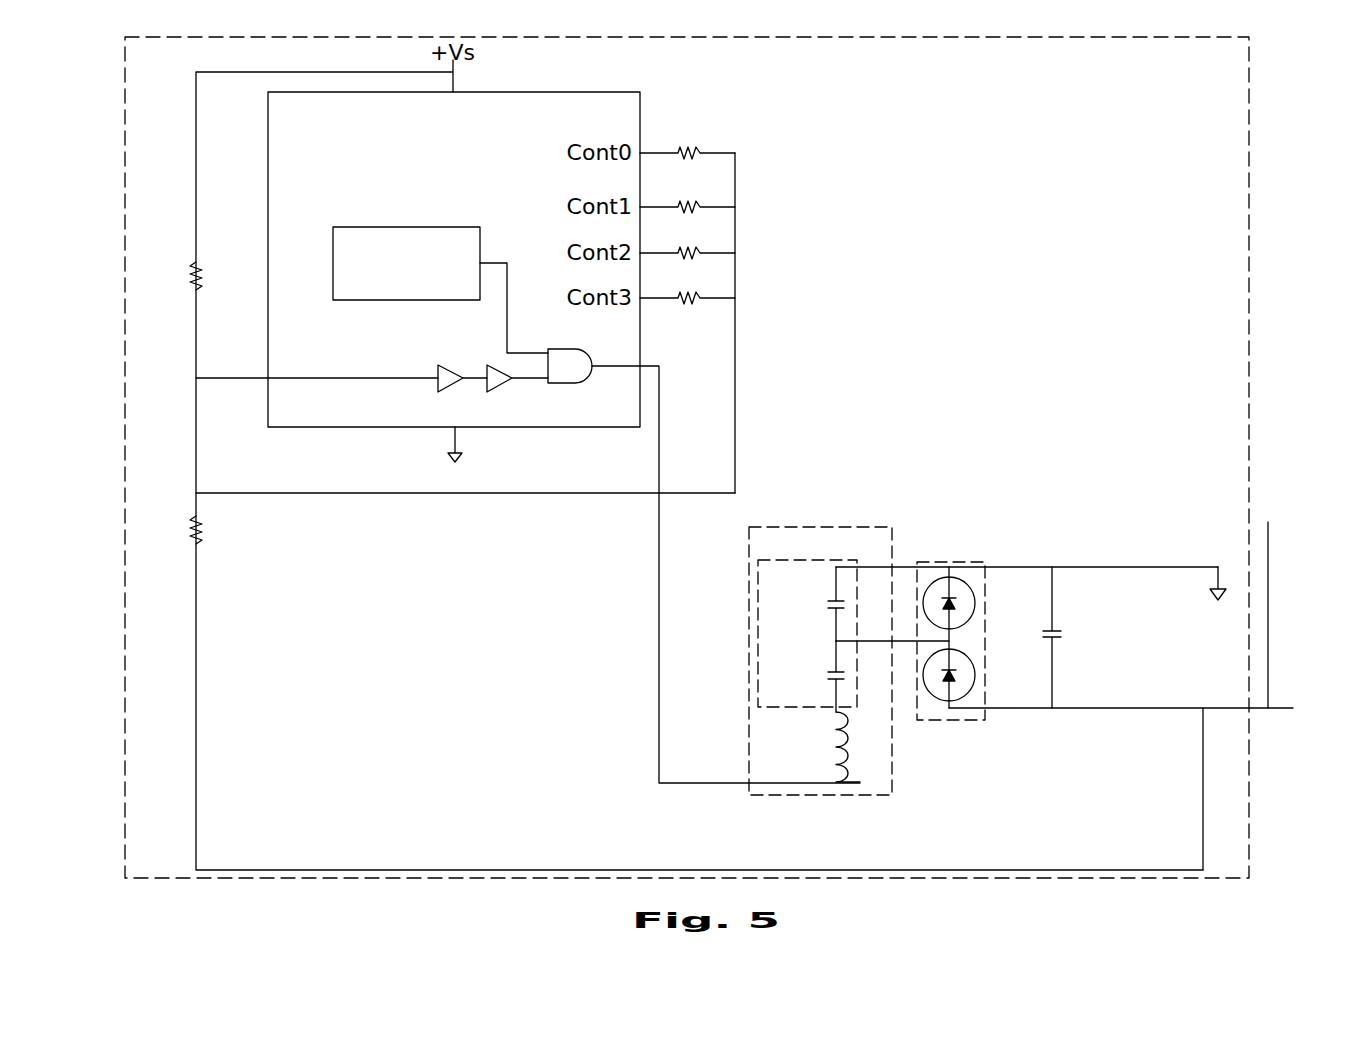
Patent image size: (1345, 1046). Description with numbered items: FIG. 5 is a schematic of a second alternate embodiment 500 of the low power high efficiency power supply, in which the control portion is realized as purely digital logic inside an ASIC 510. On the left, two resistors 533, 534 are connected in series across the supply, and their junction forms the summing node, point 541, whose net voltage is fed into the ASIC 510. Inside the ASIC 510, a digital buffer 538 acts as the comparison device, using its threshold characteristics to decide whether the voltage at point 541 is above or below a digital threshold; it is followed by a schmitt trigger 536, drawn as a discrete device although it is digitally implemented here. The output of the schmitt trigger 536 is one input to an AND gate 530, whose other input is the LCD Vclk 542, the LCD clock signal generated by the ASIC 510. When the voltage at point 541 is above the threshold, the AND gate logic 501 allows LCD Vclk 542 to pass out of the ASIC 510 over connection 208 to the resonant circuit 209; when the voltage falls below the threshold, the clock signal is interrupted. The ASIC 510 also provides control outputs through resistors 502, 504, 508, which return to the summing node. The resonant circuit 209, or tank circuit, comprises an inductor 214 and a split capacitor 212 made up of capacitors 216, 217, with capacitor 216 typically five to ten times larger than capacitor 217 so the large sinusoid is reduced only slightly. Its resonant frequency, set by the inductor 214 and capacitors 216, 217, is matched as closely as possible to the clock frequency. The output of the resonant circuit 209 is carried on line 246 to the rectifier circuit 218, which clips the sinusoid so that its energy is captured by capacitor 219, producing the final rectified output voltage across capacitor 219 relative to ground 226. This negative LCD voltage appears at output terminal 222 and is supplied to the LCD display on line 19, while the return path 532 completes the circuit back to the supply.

The second alternate embodiment 500 is at (1210, 69).
The ASIC 510 is at (318, 130).
The LCD Vclk 542 is at (372, 296).
The digital buffer 538 is at (451, 364).
The schmitt trigger 536 is at (496, 386).
The AND gate 530 is at (558, 384).
The AND gate logic 501 is at (683, 150).
The resistor 502 is at (683, 204).
The resistor 504 is at (683, 250).
The resistor 508 is at (684, 302).
The resistor 533 is at (226, 266).
The resistor 534 is at (232, 530).
The point 541 is at (197, 456).
The connection 208 is at (659, 573).
The resonant circuit 209 is at (802, 553).
The split capacitor 212 is at (810, 587).
The capacitor 216 is at (830, 606).
The capacitor 217 is at (830, 679).
The inductor 214 is at (856, 742).
The line 246 is at (902, 642).
The rectifier circuit 218 is at (985, 640).
The capacitor 219 is at (1052, 638).
The ground 226 is at (1216, 580).
The negative LCD voltage output 222 is at (1288, 705).
The line 19 is at (1270, 543).
The return line 532 is at (1003, 870).